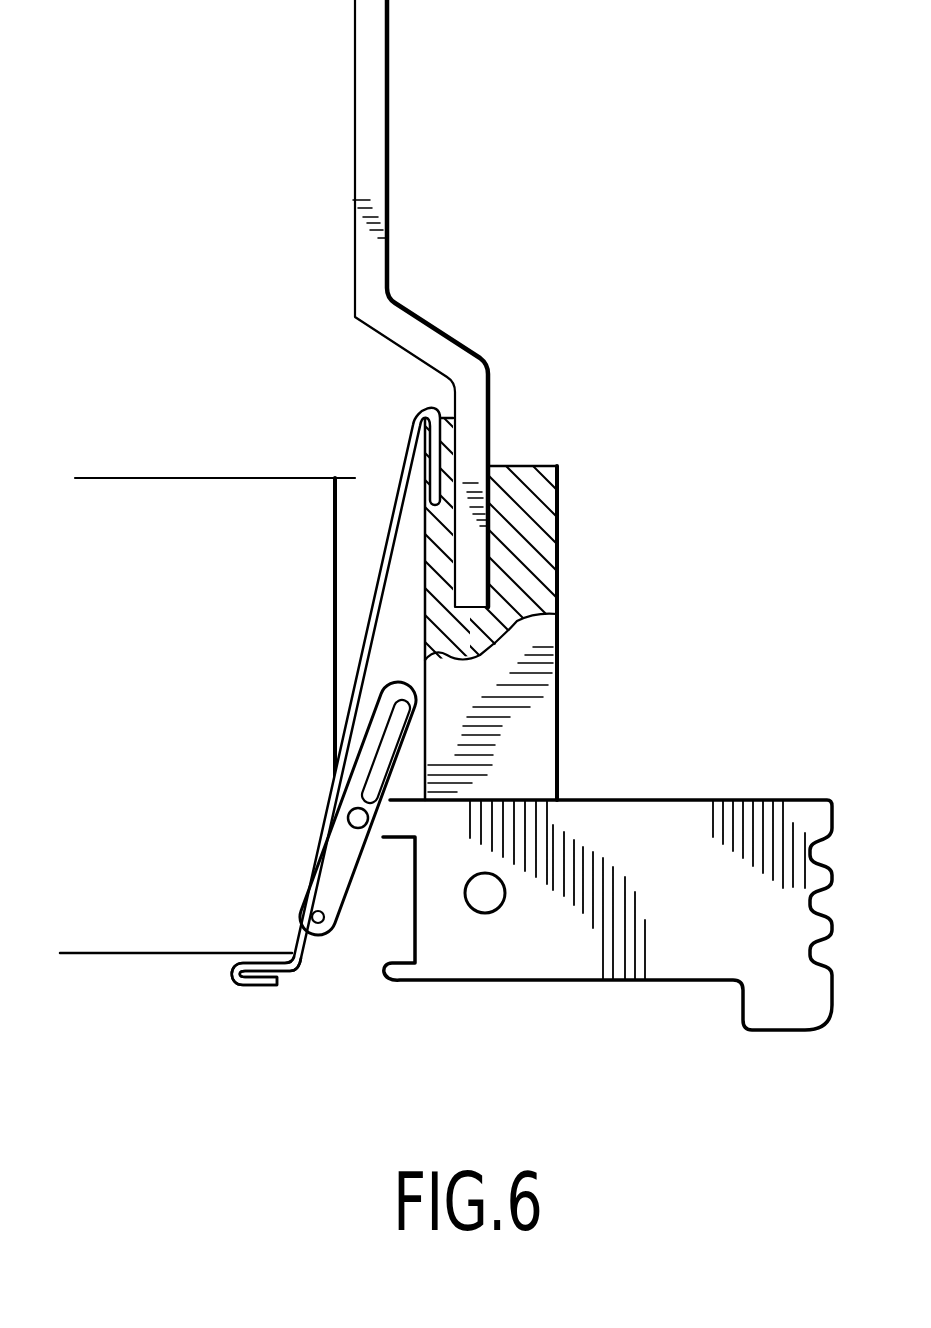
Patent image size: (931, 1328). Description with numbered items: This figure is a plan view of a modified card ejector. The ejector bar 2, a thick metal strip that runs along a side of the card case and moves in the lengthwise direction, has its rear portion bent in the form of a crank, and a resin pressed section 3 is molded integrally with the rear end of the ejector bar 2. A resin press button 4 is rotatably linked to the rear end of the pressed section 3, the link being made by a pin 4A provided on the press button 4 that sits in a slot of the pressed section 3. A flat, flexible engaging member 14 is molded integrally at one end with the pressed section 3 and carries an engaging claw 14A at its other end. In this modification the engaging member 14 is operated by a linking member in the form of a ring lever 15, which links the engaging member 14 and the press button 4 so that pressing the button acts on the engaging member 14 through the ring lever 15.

The ejector bar 2 is at (368, 100).
The pressed section 3 is at (533, 498).
The press button 4 is at (681, 947).
The pin 4A is at (487, 895).
The engaging member 14 is at (367, 632).
The engaging claw 14A is at (235, 980).
The ring lever 15 is at (337, 872).